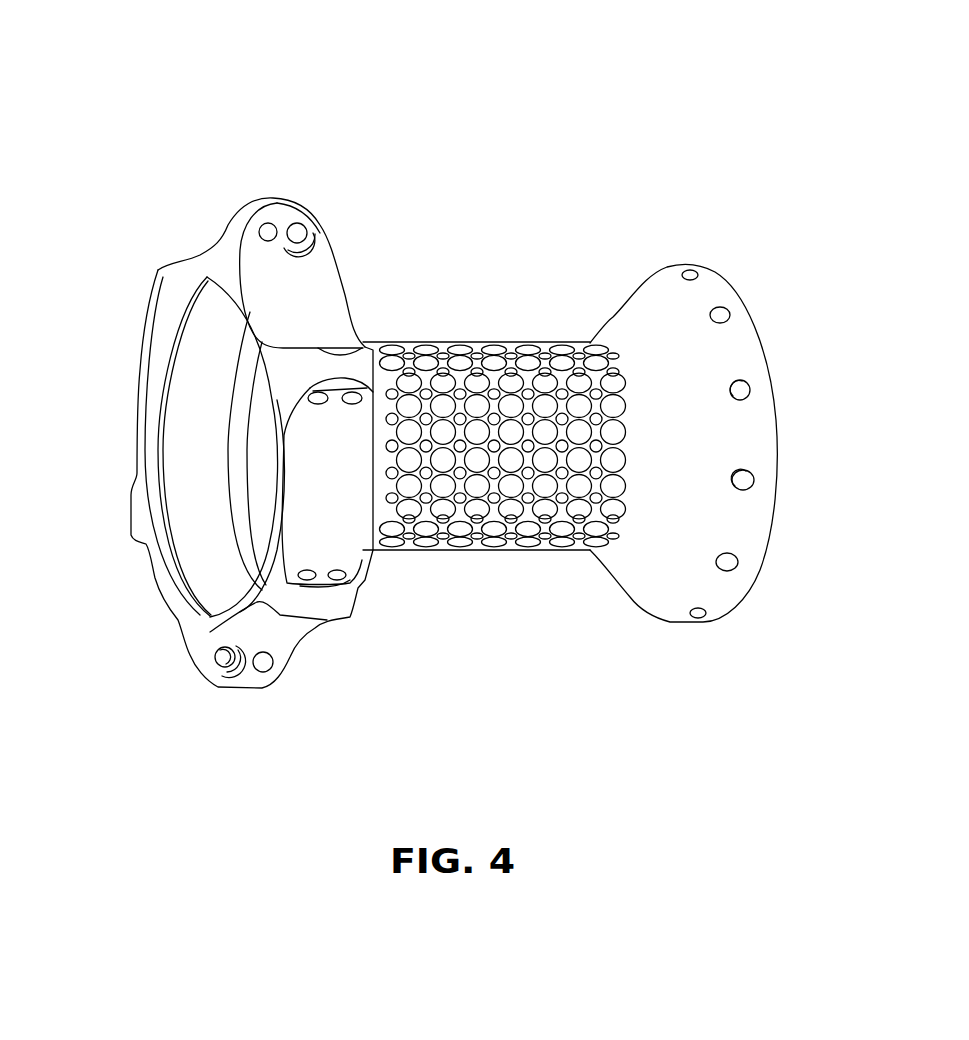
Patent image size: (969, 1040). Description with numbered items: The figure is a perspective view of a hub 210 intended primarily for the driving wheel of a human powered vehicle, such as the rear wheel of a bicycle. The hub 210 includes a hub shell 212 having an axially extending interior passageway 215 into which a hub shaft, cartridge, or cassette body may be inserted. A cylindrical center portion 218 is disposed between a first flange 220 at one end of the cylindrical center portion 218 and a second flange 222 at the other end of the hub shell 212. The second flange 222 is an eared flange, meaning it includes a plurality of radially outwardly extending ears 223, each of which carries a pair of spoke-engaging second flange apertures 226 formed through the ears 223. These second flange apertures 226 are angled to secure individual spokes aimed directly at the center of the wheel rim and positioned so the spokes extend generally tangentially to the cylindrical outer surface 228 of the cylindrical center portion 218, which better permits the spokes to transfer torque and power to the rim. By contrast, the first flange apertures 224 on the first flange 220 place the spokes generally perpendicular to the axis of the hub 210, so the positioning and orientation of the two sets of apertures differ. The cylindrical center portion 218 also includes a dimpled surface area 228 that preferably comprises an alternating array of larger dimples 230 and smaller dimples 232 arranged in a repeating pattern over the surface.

The hub 210 is at (492, 121).
The hub shell 212 is at (640, 281).
The axially extending interior passageway 215 is at (260, 448).
The cylindrical center portion 218 is at (518, 550).
The first flange 220 is at (685, 625).
The second flange 222 is at (157, 570).
The ears 223 is at (269, 197).
The first flange apertures 224 is at (730, 315).
The second flange apertures 226 is at (224, 658).
The dimpled surface area 228 is at (437, 552).
The larger dimples 230 is at (460, 342).
The smaller dimples 232 is at (545, 342).